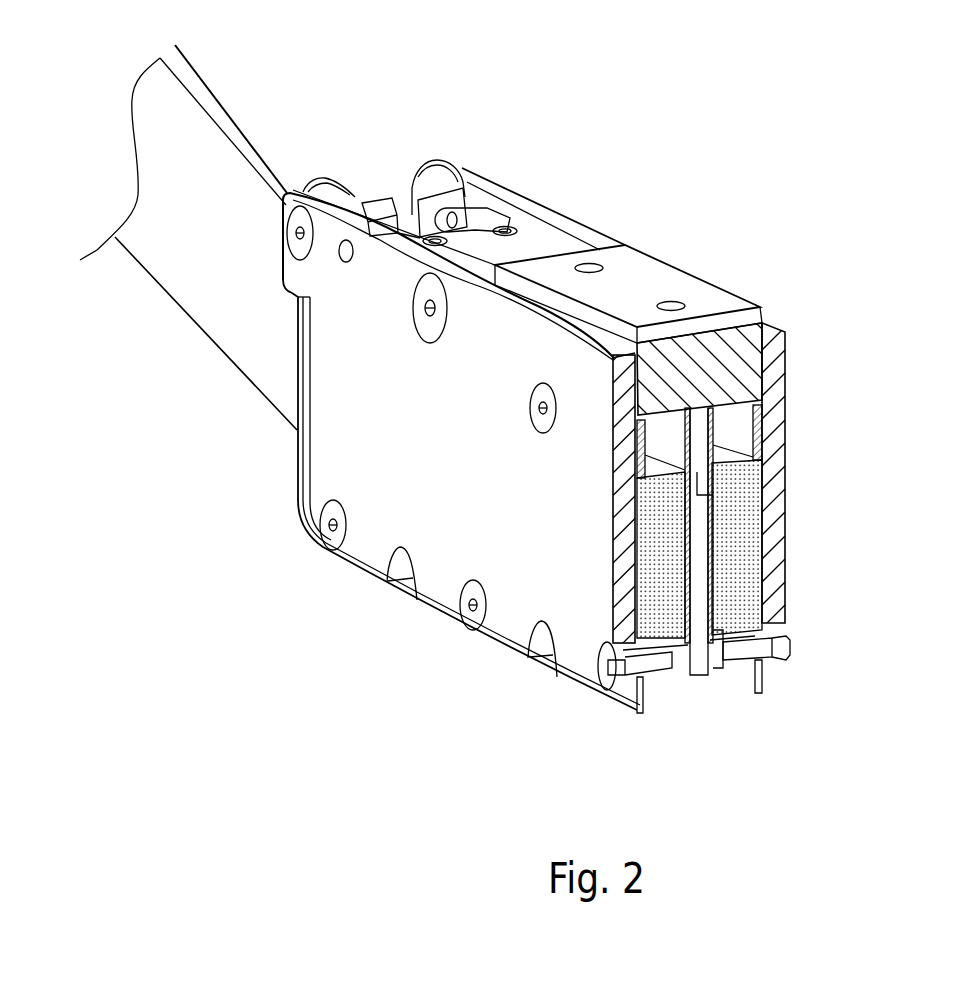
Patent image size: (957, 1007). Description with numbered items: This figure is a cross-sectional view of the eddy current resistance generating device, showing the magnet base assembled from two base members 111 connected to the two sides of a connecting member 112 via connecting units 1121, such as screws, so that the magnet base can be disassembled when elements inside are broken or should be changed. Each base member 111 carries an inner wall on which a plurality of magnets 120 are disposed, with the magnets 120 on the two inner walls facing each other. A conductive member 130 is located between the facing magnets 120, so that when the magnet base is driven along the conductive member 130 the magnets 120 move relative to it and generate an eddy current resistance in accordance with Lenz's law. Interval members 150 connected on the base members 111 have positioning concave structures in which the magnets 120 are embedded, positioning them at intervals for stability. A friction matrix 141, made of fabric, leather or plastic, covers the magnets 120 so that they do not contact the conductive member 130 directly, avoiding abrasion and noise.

The base member 111 is at (772, 370).
The connecting member 112 is at (670, 283).
The connecting unit 1121 is at (405, 316).
The magnet 120 is at (747, 540).
The conductive member 130 is at (700, 672).
The friction matrix 141 is at (715, 655).
The interval member 150 is at (735, 434).